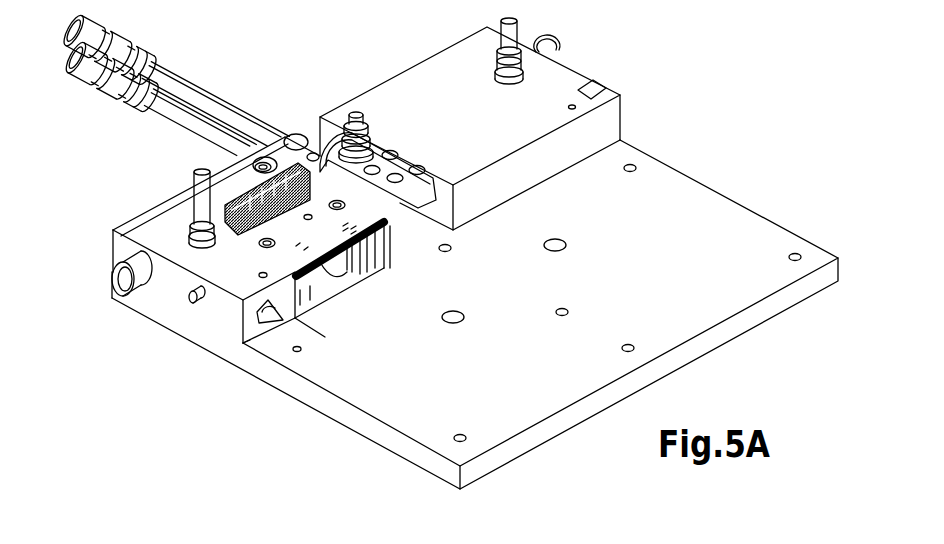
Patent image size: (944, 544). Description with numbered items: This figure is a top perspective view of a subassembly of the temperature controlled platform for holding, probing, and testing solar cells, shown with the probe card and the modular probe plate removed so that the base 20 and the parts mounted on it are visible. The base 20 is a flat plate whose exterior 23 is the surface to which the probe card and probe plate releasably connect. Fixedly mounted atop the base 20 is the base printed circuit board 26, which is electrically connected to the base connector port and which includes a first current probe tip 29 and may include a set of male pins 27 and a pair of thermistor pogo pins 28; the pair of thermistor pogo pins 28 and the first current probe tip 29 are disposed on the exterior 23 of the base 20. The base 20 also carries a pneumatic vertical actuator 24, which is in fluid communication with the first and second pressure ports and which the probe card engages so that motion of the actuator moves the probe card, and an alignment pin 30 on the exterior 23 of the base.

The base 20 is at (538, 432).
The exterior of the base 23 is at (658, 193).
The pneumatic vertical actuator 24 is at (334, 180).
The base printed circuit board 26 is at (236, 192).
The set of male pins 27 is at (282, 187).
The pair of thermistor pogo pins 28 is at (368, 270).
The first current probe tip 29 is at (336, 268).
The alignment pin 30 is at (243, 343).